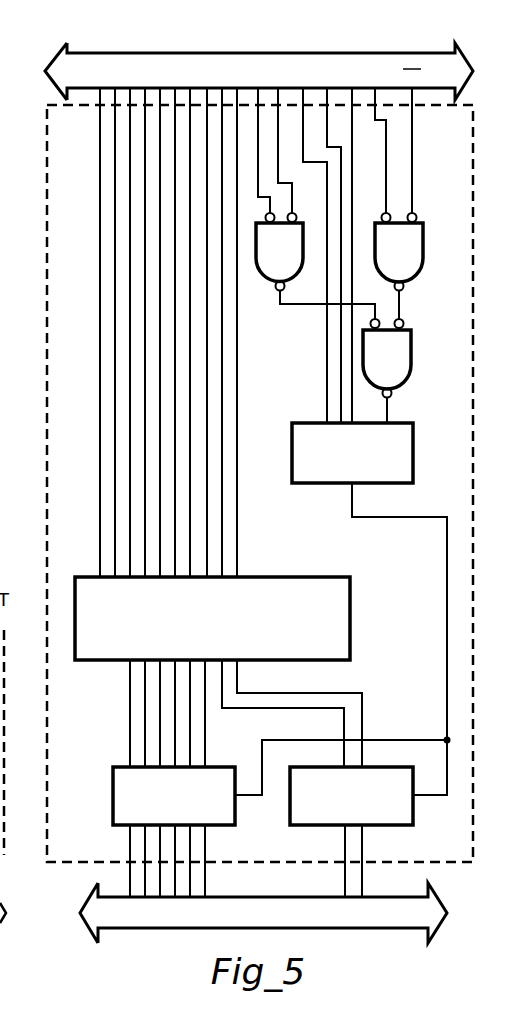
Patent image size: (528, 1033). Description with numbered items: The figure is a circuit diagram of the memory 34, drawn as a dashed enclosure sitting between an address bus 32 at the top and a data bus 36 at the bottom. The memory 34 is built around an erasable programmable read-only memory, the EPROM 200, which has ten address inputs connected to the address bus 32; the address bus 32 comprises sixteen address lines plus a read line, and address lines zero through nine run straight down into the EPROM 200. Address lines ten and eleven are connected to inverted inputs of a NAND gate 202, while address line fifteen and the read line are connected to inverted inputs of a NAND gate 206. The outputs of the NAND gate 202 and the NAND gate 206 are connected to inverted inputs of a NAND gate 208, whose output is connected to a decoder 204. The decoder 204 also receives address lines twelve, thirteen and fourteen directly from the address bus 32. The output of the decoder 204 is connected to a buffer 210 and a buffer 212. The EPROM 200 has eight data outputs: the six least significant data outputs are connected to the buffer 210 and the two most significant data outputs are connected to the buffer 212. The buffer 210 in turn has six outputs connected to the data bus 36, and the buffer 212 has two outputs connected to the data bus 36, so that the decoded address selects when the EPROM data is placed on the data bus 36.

The address bus 32 is at (477, 79).
The memory 34 is at (47, 110).
The data bus 36 is at (337, 928).
The erasable programmable read-only memory (EPROM) 200 is at (264, 577).
The NAND gate 202 is at (267, 257).
The decoder 204 is at (292, 423).
The NAND gate 206 is at (386, 257).
The NAND gate 208 is at (374, 364).
The buffer 210 is at (113, 770).
The buffer 212 is at (374, 767).